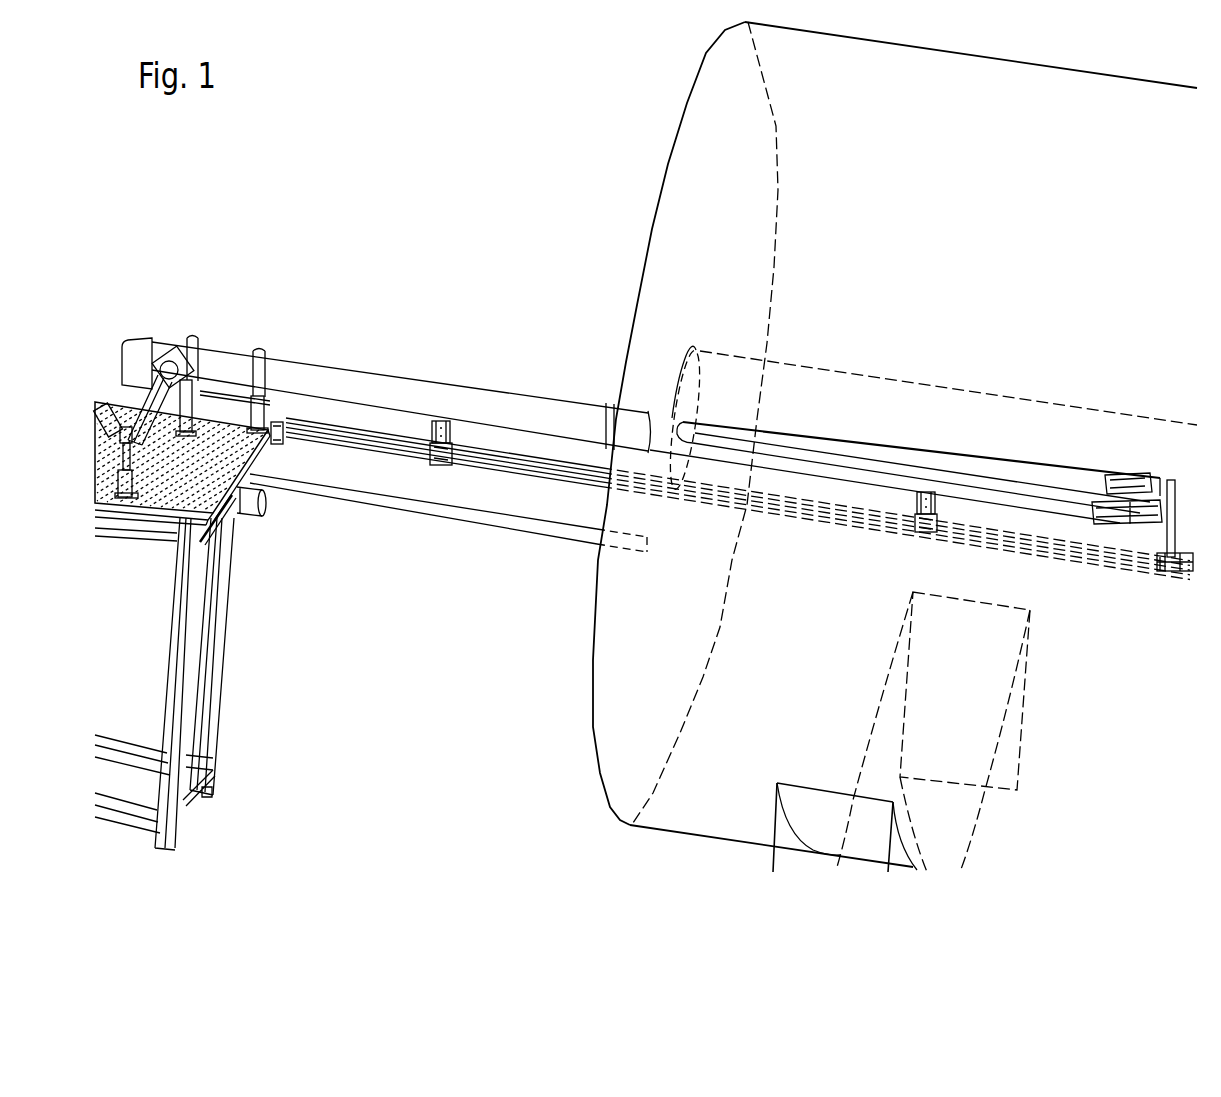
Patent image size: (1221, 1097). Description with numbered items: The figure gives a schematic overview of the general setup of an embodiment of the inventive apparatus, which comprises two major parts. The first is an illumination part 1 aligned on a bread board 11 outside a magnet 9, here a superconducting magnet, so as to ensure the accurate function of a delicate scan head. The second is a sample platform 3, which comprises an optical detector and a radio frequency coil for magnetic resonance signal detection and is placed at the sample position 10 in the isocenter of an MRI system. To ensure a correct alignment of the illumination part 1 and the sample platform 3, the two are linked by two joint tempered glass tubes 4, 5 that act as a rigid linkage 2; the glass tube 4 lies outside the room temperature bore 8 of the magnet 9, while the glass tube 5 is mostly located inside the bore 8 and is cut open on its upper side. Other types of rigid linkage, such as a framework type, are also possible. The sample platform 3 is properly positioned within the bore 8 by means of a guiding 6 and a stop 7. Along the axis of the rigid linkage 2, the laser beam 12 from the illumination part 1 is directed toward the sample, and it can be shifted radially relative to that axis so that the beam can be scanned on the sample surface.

The illumination part 1 is at (148, 270).
The rigid linkage 2 is at (386, 376).
The sample platform 3 is at (1122, 522).
The glass tube 4 is at (350, 362).
The glass tube 5 is at (810, 468).
The guiding 6 is at (440, 458).
The stop 7 is at (1167, 532).
The room temperature bore 8 is at (725, 392).
The magnet 9 is at (706, 183).
The sample position 10 is at (1092, 488).
The bread board 11 is at (237, 523).
The laser beam 12 is at (866, 443).